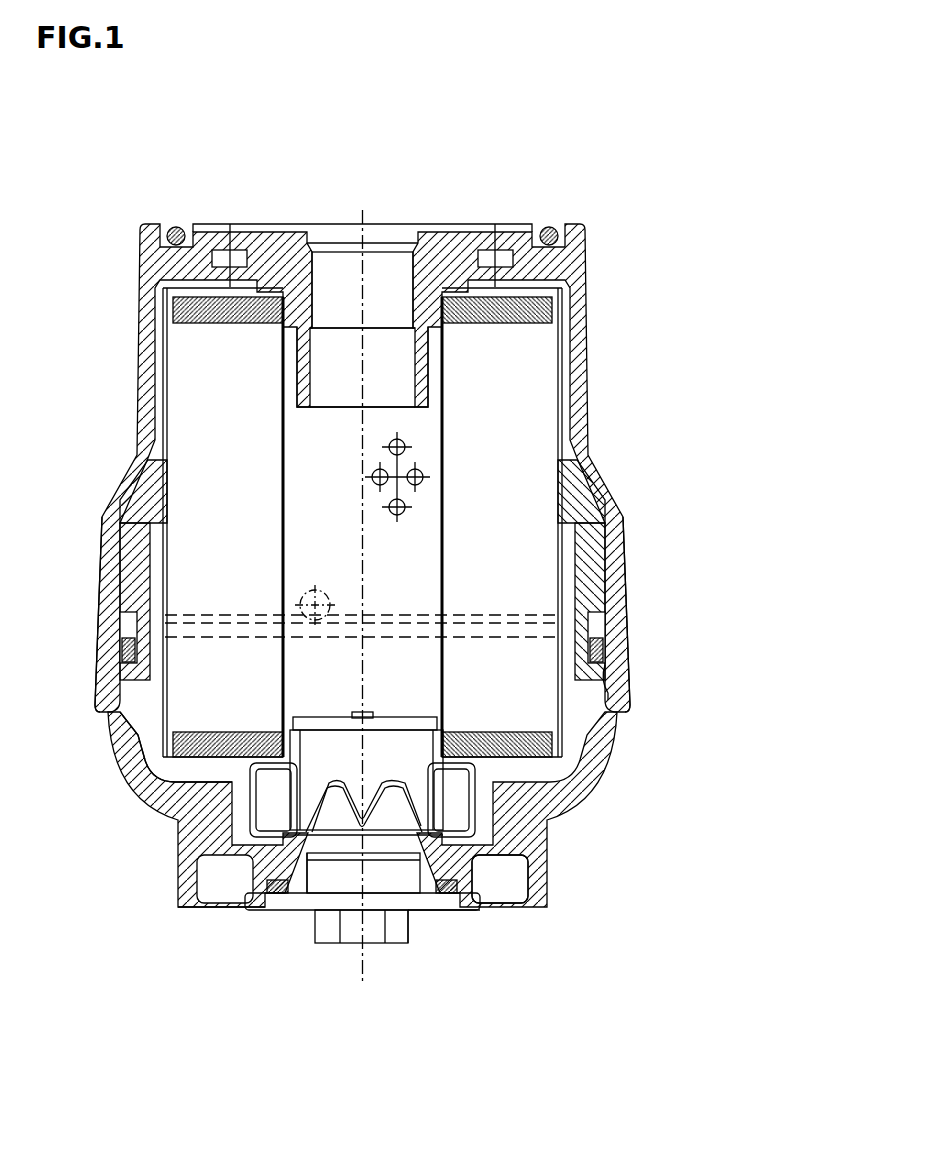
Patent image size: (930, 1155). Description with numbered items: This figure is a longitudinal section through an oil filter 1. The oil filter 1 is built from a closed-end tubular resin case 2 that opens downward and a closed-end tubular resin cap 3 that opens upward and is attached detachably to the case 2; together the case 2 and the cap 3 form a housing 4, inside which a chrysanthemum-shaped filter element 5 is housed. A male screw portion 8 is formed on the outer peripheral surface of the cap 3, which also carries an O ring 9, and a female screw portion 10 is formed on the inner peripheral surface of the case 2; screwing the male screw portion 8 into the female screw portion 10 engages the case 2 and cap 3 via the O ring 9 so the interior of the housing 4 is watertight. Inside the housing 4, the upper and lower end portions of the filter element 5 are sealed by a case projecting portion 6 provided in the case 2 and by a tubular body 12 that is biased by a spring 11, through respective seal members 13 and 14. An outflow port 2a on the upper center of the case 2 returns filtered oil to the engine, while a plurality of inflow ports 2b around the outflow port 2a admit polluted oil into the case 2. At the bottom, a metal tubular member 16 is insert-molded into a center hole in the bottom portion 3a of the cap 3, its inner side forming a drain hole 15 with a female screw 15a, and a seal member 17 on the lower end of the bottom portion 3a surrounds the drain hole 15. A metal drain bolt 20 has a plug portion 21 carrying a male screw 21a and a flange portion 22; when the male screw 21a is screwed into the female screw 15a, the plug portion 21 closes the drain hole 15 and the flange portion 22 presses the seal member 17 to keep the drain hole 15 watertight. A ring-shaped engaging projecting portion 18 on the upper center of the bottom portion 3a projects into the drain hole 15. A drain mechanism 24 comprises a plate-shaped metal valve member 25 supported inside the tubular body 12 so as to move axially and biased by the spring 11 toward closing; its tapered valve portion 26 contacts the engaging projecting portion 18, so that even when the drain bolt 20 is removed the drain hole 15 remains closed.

The oil filter 1 is at (623, 205).
The case 2 is at (590, 305).
The outflow port 2a is at (342, 240).
The inflow ports 2b is at (220, 230).
The cap 3 is at (542, 784).
The bottom portion 3a is at (223, 882).
The housing 4 is at (643, 561).
The filter element 5 is at (551, 380).
The case projecting portion 6 is at (444, 236).
The male screw portion 8 is at (133, 575).
The O ring 9 is at (122, 641).
The female screw portion 10 is at (112, 520).
The spring 11 is at (476, 857).
The tubular body 12 is at (517, 827).
The seal member 13 is at (278, 230).
The seal member 14 is at (565, 697).
The drain hole 15 is at (337, 900).
The female screw 15a is at (313, 897).
The tubular member 16 is at (297, 893).
The seal member 17 is at (468, 884).
The engaging projecting portion 18 is at (347, 912).
The drain bolt 20 is at (428, 924).
The plug portion 21 is at (393, 902).
The male screw 21a is at (443, 923).
The flange portion 22 is at (273, 889).
The drain mechanism 24 is at (491, 921).
The valve member 25 is at (212, 847).
The valve portion 26 is at (212, 790).